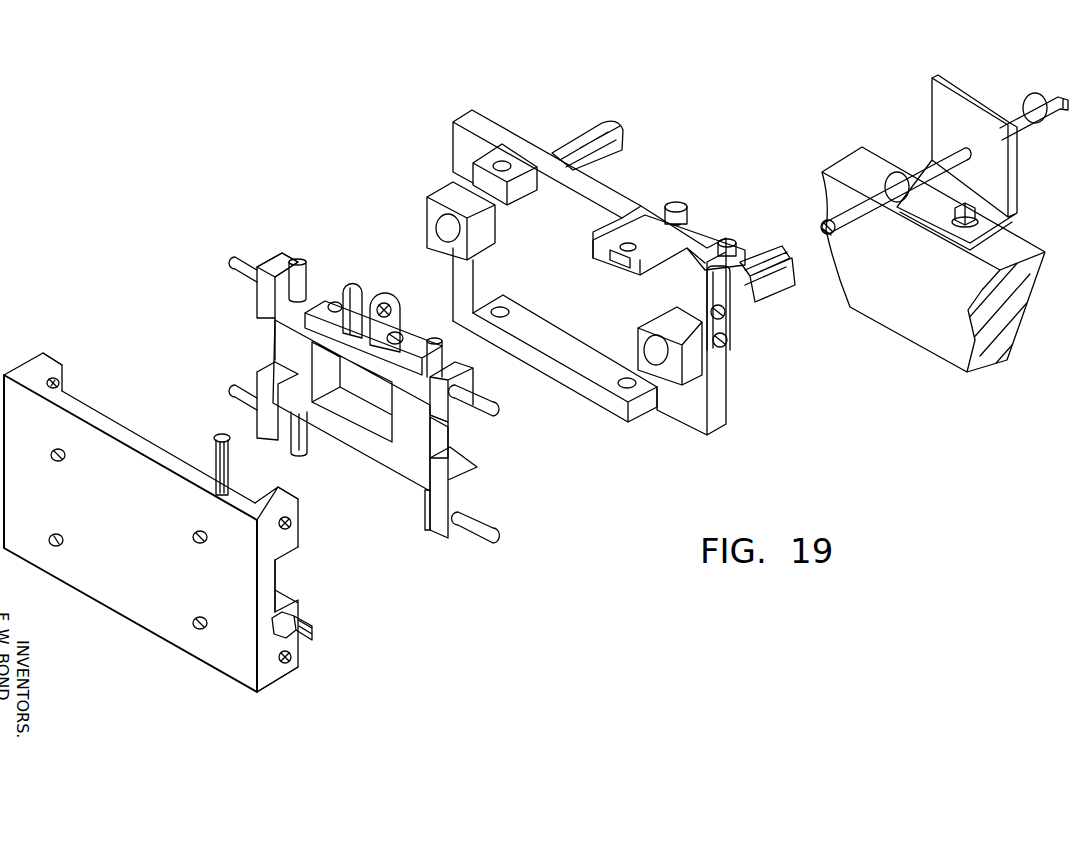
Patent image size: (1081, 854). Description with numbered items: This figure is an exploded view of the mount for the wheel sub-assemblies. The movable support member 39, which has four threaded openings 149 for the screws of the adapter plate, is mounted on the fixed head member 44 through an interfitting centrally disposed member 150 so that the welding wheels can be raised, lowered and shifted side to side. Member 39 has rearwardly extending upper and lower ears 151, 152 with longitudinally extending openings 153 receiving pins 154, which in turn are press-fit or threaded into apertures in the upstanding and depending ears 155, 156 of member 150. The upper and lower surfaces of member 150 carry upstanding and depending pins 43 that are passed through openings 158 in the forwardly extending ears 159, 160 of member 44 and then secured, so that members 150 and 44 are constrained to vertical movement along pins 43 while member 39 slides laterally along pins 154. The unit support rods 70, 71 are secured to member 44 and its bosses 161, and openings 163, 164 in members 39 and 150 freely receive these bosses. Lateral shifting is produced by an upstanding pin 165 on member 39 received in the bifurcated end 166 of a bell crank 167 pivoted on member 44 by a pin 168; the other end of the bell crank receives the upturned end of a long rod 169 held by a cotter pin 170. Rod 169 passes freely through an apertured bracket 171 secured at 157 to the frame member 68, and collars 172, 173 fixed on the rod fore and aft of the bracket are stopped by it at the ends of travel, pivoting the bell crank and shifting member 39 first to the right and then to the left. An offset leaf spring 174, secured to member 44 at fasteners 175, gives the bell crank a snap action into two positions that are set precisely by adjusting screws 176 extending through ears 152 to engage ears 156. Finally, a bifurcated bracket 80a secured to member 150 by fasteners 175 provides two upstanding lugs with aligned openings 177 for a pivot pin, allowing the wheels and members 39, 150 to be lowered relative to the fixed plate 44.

The movable support member 39 is at (135, 620).
The upstanding and depending pins 43 is at (440, 510).
The fixed head member 44 is at (727, 390).
The frame member 68 is at (910, 330).
The unit support rod 70 is at (730, 330).
The unit support rod 71 is at (628, 150).
The bifurcated bracket 80a is at (400, 312).
The threaded openings 149 is at (200, 617).
The interfitting centrally disposed member 150 is at (373, 470).
The upper ears 151 is at (320, 550).
The lower ears 152 is at (280, 688).
The longitudinally extending openings 153 is at (312, 660).
The pins 154 is at (520, 512).
The upstanding ears 155 is at (470, 365).
The depending ears 156 is at (438, 532).
The securing point of bracket 157 is at (968, 205).
The openings 158 is at (595, 340).
The forwardly extending ear 159 is at (515, 190).
The forwardly extending ear 160 is at (575, 402).
The bosses 161 is at (620, 311).
The opening 163 is at (277, 585).
The opening 164 is at (450, 445).
The upstanding pin 165 is at (212, 460).
The bifurcated end 166 is at (618, 265).
The bell crank 167 is at (700, 238).
The pin 168 is at (676, 200).
The long rod 169 is at (778, 246).
The cotter pin 170 is at (745, 218).
The apertured bracket 171 is at (928, 98).
The collar 172 is at (893, 172).
The rear collar 173 is at (1028, 100).
The offset leaf spring 174 is at (775, 300).
The fasteners 175 is at (330, 334).
The adjusting screws 176 is at (300, 623).
The aligned openings 177 is at (358, 290).